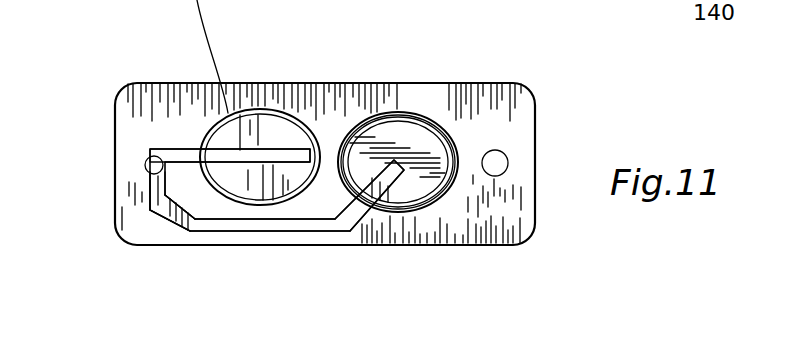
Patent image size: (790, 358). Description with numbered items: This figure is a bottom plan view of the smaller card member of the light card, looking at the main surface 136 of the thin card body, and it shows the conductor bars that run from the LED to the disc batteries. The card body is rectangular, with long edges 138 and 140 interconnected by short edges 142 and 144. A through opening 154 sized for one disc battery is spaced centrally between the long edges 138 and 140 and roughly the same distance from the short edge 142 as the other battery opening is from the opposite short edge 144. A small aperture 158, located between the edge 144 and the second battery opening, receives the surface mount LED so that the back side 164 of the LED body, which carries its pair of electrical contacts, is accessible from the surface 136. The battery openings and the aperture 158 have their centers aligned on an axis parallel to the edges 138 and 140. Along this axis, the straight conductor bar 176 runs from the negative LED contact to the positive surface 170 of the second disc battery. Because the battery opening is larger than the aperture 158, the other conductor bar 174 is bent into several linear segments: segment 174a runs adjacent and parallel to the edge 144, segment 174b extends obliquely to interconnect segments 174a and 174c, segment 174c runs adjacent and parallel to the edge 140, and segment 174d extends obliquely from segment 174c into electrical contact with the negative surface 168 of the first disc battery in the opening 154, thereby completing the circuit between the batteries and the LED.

The main surface of card body 136 is at (442, 108).
The long edge 138 is at (345, 82).
The long edge 140 is at (463, 243).
The short edge 142 is at (535, 152).
The short edge 144 is at (115, 120).
The through opening 154 is at (458, 153).
The aperture 158 is at (143, 160).
The back side of LED body 164 is at (150, 172).
The negative surface of disc battery 168 is at (420, 208).
The positive surface of disc battery 170 is at (275, 127).
The conductor bar 174 is at (316, 236).
The conductor bar segment 174a is at (157, 188).
The conductor bar segment 174b is at (170, 213).
The conductor bar segment 174c is at (253, 227).
The conductor bar segment 174d is at (367, 210).
The conductor bar 176 is at (208, 152).